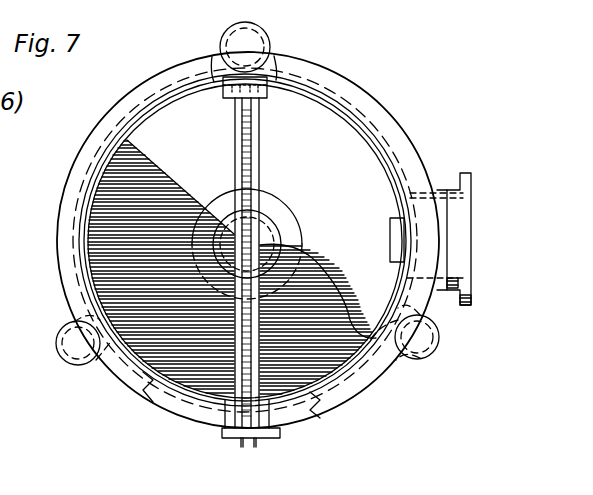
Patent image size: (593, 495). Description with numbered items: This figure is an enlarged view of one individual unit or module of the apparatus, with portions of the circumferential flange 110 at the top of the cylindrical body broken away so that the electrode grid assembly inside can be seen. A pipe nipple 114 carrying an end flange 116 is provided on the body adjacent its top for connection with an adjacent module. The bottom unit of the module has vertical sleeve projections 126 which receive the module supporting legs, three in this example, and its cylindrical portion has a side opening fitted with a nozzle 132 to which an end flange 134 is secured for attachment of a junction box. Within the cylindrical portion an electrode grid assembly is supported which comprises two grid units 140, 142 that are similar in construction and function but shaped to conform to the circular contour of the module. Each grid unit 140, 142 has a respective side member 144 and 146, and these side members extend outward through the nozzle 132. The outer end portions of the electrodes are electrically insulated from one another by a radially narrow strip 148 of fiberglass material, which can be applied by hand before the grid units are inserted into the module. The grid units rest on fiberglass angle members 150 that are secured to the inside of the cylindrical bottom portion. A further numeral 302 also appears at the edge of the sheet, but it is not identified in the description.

The circumferential flange 110 is at (72, 177).
The pipe nipple 114 is at (436, 193).
The end flange 116 is at (466, 306).
The vertical sleeve projections 126 is at (270, 37).
The nozzle 132 is at (228, 420).
The end flange 134 is at (226, 440).
The grid unit 140 is at (308, 355).
The grid unit 142 is at (160, 322).
The side member 144 is at (260, 136).
The side member 146 is at (233, 138).
The radially narrow strip 148 is at (111, 150).
The fiberglass angle members 150 is at (212, 84).
The adjacent figure numeral 302 is at (303, 486).